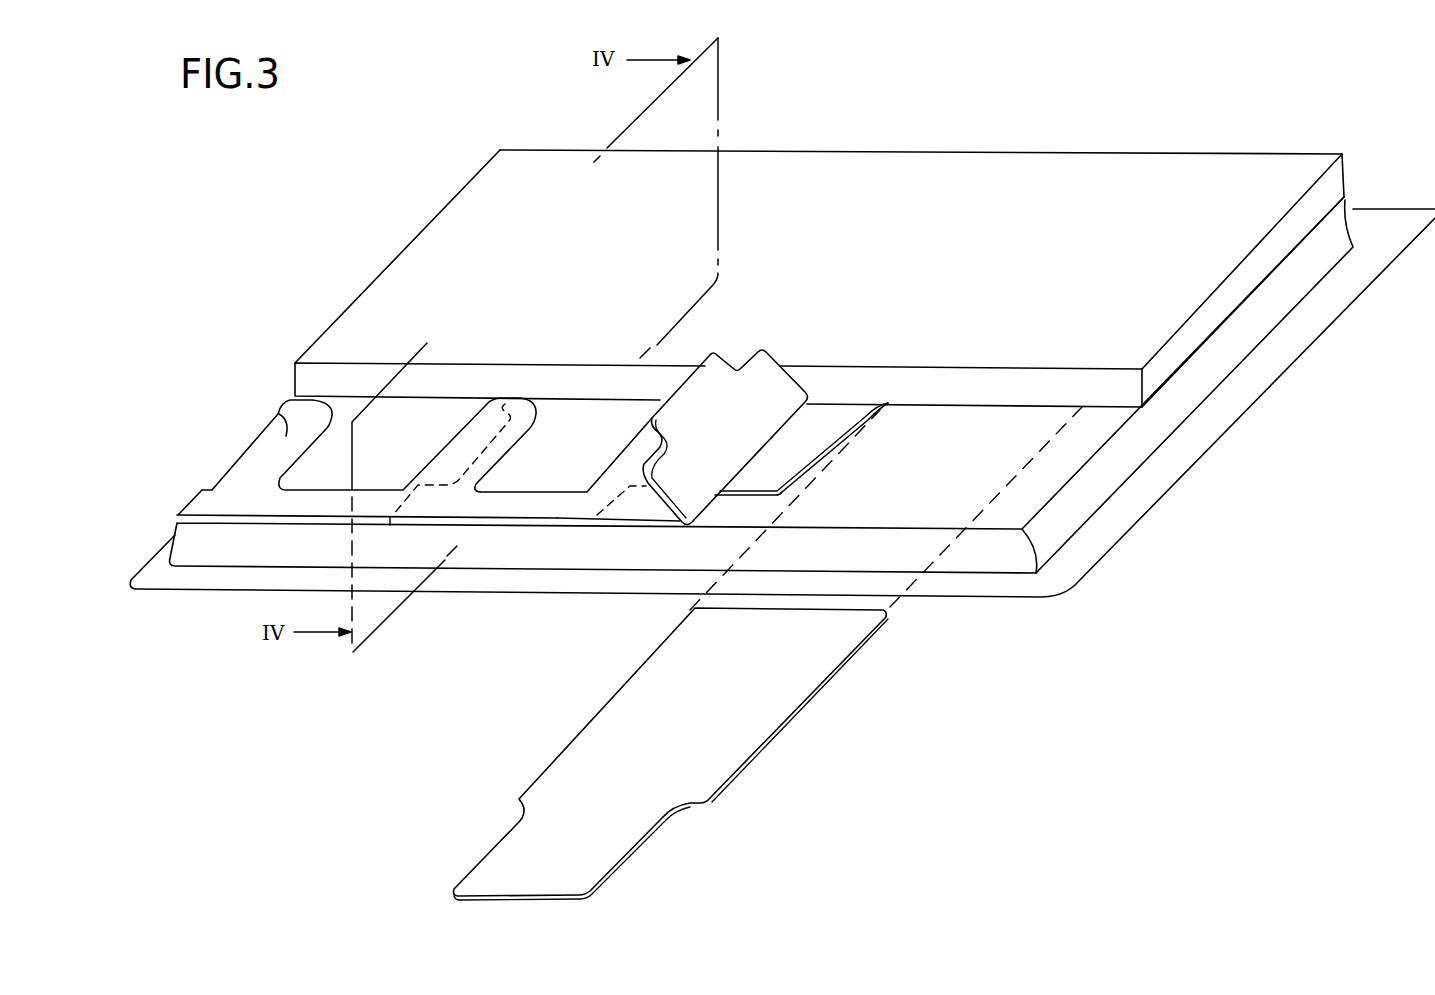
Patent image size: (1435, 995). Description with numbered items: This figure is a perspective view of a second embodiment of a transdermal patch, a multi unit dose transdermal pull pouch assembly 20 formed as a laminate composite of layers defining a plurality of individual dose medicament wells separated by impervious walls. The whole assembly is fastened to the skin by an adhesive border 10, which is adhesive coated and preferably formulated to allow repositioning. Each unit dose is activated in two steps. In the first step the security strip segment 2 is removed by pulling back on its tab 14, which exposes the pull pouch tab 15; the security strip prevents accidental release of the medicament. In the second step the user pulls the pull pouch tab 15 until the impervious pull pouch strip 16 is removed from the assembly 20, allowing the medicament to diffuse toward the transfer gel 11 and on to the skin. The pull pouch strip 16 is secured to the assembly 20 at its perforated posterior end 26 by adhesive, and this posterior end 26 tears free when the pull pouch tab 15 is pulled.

The security strip segment 2 is at (375, 438).
The adhesive border 10 is at (1063, 565).
The transfer gel 11 is at (218, 540).
The tab 14 is at (700, 392).
The pull pouch tab 15 is at (772, 462).
The pull pouch strip 16 is at (748, 702).
The multi unit dose transdermal pull pouch assembly 20 is at (276, 291).
The posterior end 26 is at (1312, 152).